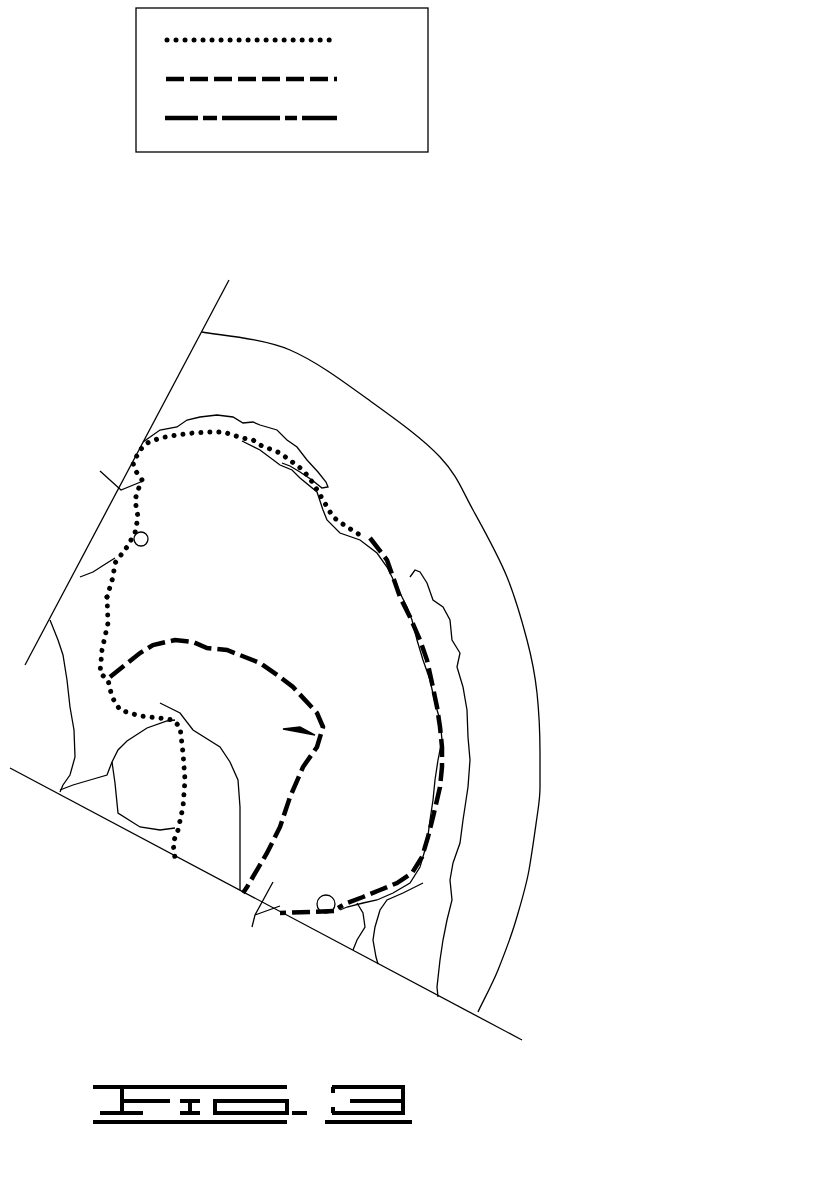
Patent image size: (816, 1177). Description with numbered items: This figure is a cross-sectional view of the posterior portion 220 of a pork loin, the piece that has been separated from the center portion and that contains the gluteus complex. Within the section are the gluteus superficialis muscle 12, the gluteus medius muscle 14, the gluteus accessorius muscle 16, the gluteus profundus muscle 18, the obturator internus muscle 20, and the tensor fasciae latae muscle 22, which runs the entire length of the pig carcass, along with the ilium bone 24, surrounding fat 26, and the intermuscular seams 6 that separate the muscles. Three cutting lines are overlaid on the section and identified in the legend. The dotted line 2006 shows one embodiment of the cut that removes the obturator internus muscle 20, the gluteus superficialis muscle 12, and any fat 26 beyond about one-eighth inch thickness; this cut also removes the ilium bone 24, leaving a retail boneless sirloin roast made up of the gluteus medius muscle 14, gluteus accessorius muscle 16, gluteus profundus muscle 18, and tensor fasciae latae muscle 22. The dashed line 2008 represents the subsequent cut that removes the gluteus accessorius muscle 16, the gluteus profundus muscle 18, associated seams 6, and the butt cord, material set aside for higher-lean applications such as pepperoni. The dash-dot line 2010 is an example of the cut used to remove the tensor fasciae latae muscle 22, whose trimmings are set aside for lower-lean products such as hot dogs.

The posterior portion 220 is at (536, 382).
The gluteus superficialis muscle 12 is at (248, 423).
The gluteus medius muscle 14 is at (277, 578).
The gluteus accessorius muscle 16 is at (260, 732).
The gluteus profundus muscle 18 is at (223, 838).
The obturator internus muscle 20 is at (94, 643).
The tensor fasciae latae muscle 22 is at (425, 944).
The ilium bone 24 is at (157, 792).
The fat 26 is at (422, 517).
The seams 6 is at (136, 533).
The line 2006 is at (248, 442).
The line 2008 is at (276, 489).
The line 2010 is at (280, 119).